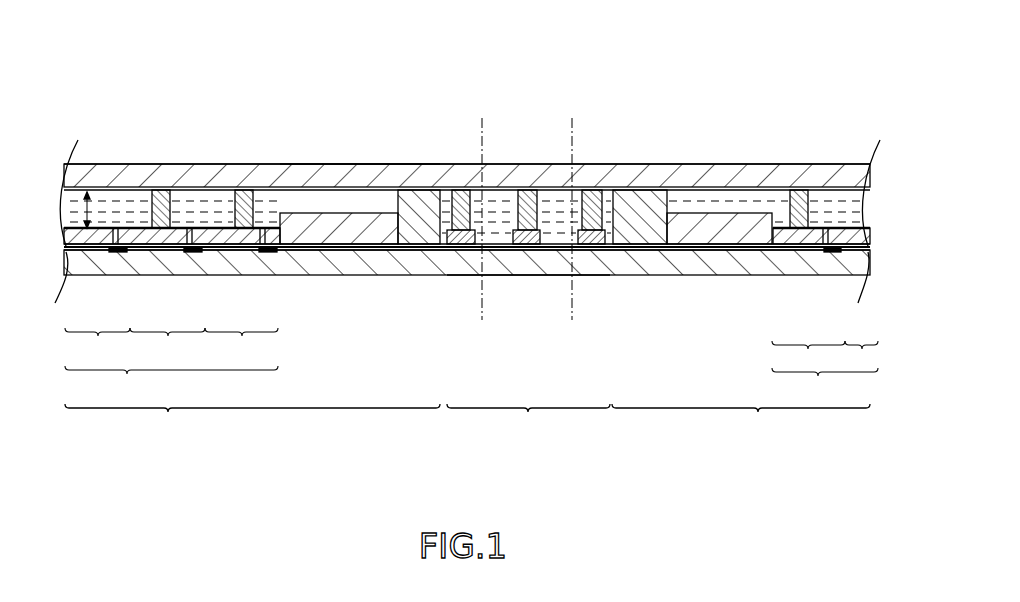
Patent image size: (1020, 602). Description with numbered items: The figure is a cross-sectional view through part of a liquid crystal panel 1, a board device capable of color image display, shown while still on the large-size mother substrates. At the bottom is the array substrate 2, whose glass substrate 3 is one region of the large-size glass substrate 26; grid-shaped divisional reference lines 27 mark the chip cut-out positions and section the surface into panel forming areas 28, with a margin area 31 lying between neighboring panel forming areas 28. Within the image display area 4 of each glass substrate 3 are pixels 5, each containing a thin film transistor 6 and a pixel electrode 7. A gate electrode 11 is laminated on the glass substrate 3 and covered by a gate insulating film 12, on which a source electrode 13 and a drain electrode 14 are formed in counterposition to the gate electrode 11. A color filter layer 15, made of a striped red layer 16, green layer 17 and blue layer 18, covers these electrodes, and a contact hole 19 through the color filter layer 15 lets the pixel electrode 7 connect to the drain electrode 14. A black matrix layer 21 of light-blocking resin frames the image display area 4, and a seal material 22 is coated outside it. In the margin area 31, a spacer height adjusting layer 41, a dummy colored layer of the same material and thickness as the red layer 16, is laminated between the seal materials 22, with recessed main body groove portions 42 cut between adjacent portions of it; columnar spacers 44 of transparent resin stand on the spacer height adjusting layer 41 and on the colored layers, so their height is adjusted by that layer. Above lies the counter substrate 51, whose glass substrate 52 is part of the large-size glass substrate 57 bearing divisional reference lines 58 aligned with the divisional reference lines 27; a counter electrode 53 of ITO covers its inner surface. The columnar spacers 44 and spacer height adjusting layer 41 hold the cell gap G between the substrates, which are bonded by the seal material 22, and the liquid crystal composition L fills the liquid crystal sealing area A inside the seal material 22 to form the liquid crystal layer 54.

The liquid crystal panel 1 is at (734, 48).
The array substrate 2 is at (808, 275).
The glass substrate 3 is at (832, 258).
The image display area 4 is at (471, 383).
The pixel 5 is at (471, 350).
The thin film transistor 6 is at (118, 251).
The pixel electrode 7 is at (98, 226).
The gate electrode 11 is at (126, 252).
The gate insulating film 12 is at (337, 254).
The source electrode 13 is at (128, 248).
The drain electrode 14 is at (110, 252).
The color filter layer 15 is at (140, 225).
The red layer 16 is at (268, 228).
The green layer 17 is at (203, 228).
The blue layer 18 is at (122, 190).
The contact hole 19 is at (100, 249).
The black matrix layer 21 is at (303, 213).
The seal material 22 is at (412, 190).
The large-size glass substrate 26 is at (640, 277).
The divisional reference lines 27 is at (482, 165).
The panel forming areas 28 is at (467, 423).
The margin area 31 is at (528, 423).
The spacer height adjusting layer 41 is at (458, 246).
The main body groove portions 42 is at (505, 188).
The columnar spacers 44 is at (460, 190).
The counter substrate 51 is at (798, 164).
The glass substrate 52 is at (733, 164).
The counter electrode 53 is at (633, 190).
The liquid crystal layer 54 is at (852, 206).
The large-size glass substrate 57 is at (363, 164).
The divisional reference lines 58 is at (484, 247).
The liquid crystal sealing area A is at (326, 202).
The cell gap G is at (86, 230).
The liquid crystal composition L is at (692, 200).